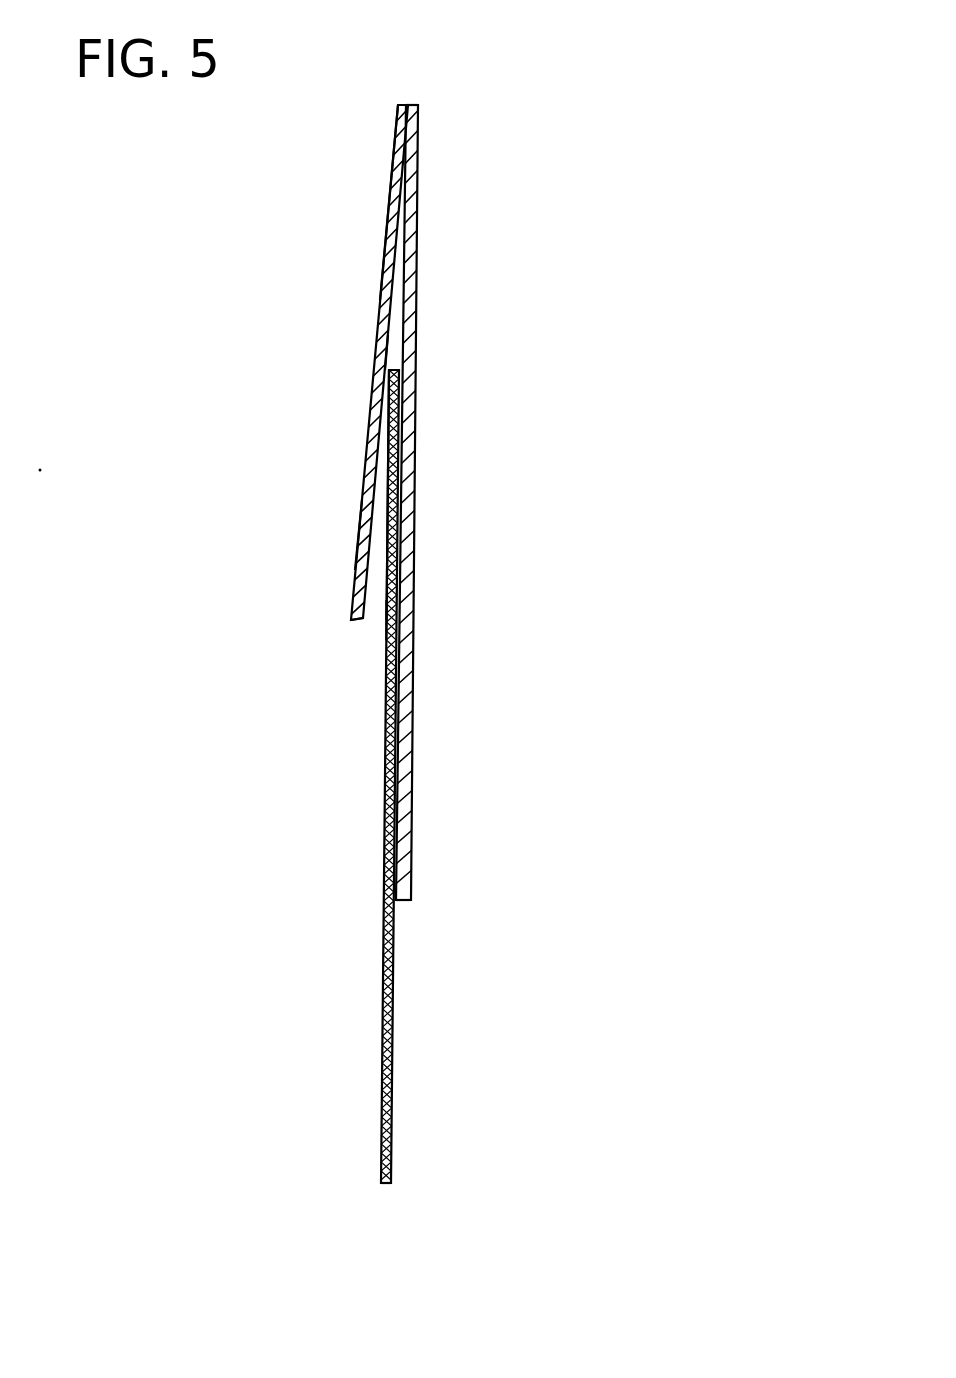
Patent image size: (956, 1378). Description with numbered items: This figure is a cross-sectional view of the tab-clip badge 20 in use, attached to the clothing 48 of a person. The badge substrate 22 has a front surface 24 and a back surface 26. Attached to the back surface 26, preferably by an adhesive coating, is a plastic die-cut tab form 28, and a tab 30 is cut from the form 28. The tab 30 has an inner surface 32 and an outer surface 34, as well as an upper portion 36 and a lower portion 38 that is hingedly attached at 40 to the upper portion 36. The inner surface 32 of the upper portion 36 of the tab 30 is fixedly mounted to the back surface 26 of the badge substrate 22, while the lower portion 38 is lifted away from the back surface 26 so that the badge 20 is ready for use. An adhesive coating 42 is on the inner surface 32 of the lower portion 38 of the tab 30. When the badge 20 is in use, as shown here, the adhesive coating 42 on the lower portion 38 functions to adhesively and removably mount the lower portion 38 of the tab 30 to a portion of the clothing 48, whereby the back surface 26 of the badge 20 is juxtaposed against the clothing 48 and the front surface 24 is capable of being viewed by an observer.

The tab-clip badge 20 is at (427, 260).
The badge substrate 22 is at (408, 902).
The front surface 24 is at (415, 518).
The back surface 26 is at (393, 608).
The plastic die-cut tab form 28 is at (395, 772).
The tab 30 is at (363, 480).
The inner surface 32 is at (392, 353).
The outer surface 34 is at (378, 320).
The upper portion 36 is at (395, 148).
The lower portion 38 is at (350, 603).
The hinge 40 is at (397, 122).
The adhesive coating 42 is at (367, 570).
The clothing 48 is at (372, 1188).